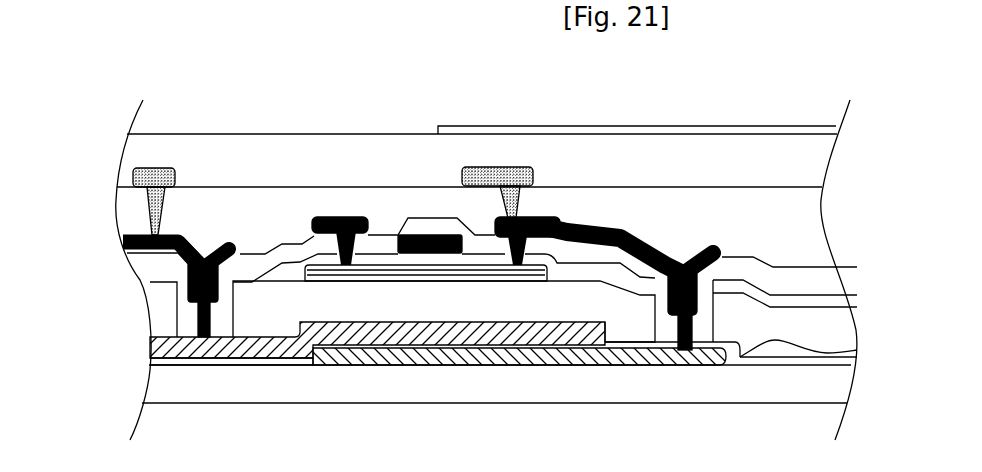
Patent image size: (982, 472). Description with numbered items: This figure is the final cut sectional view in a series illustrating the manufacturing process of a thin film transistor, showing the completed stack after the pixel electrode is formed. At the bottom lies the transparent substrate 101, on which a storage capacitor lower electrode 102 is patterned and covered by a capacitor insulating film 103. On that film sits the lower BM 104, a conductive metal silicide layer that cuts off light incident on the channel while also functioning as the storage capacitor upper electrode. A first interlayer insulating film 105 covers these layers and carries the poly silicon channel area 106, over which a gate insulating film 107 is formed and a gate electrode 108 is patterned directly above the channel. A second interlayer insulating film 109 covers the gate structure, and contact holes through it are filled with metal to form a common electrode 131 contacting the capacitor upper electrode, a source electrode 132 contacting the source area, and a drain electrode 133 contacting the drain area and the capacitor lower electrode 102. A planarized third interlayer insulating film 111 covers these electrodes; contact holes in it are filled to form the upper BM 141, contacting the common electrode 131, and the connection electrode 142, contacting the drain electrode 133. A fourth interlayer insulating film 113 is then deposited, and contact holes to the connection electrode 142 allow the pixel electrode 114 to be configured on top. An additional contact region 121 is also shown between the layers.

The transparent substrate 101 is at (833, 393).
The storage capacitor lower electrode 102 is at (852, 350).
The capacitor insulating film 103 is at (153, 362).
The lower BM 104 is at (155, 340).
The first interlayer insulating film 105 is at (157, 322).
The channel area 106 is at (400, 272).
The gate insulating film 107 is at (147, 292).
The gate electrode 108 is at (400, 233).
The second interlayer insulating film 109 is at (822, 282).
The third interlayer insulating film 111 is at (798, 215).
The fourth interlayer insulating film 113 is at (812, 157).
The pixel electrode 114 is at (702, 128).
The source electrode 121 is at (172, 272).
The common electrode 131 is at (127, 234).
The source electrode 132 is at (325, 217).
The drain electrode 133 is at (600, 228).
The upper BM 141 is at (133, 168).
The connection electrode 142 is at (462, 165).